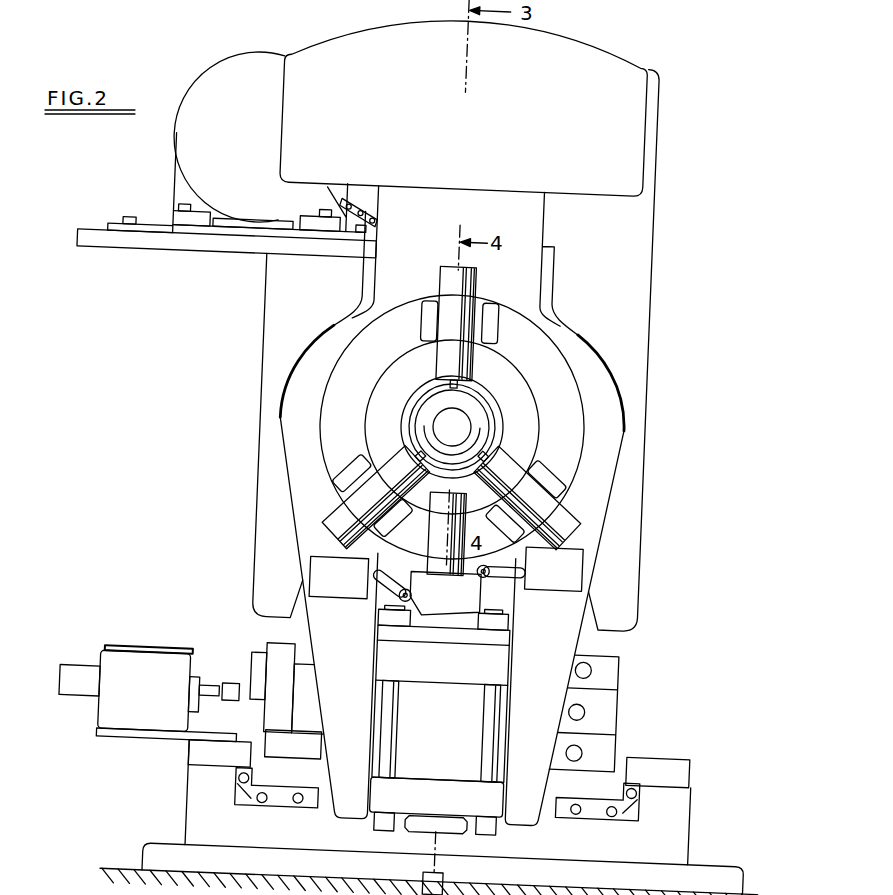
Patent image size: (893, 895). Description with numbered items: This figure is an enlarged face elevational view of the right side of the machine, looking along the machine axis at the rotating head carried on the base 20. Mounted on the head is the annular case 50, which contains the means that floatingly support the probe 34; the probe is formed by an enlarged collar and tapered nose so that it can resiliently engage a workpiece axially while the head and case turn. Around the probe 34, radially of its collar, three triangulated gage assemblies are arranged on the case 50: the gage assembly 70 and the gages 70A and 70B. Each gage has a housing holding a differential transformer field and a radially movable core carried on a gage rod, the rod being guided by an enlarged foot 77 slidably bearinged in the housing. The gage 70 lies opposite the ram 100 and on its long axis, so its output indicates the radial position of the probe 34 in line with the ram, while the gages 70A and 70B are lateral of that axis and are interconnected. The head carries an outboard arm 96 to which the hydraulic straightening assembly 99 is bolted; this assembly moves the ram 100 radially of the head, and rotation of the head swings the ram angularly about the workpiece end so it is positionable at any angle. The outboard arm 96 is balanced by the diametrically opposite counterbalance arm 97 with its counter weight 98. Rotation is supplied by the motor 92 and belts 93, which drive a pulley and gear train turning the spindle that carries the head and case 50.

The base 20 is at (188, 788).
The probe 34 is at (472, 413).
The annular case 50 is at (570, 423).
The gage assembly 70 is at (473, 290).
The gage 70A is at (552, 516).
The gage 70B is at (335, 515).
The enlarged foot 77 is at (447, 384).
The motor 92 is at (252, 133).
The belts 93 is at (352, 203).
The outboard arm 96 is at (357, 737).
The counterbalance arm 97 is at (426, 252).
The counter weight 98 is at (531, 133).
The hydraulic straightening assembly 99 is at (451, 672).
The ram 100 is at (440, 566).